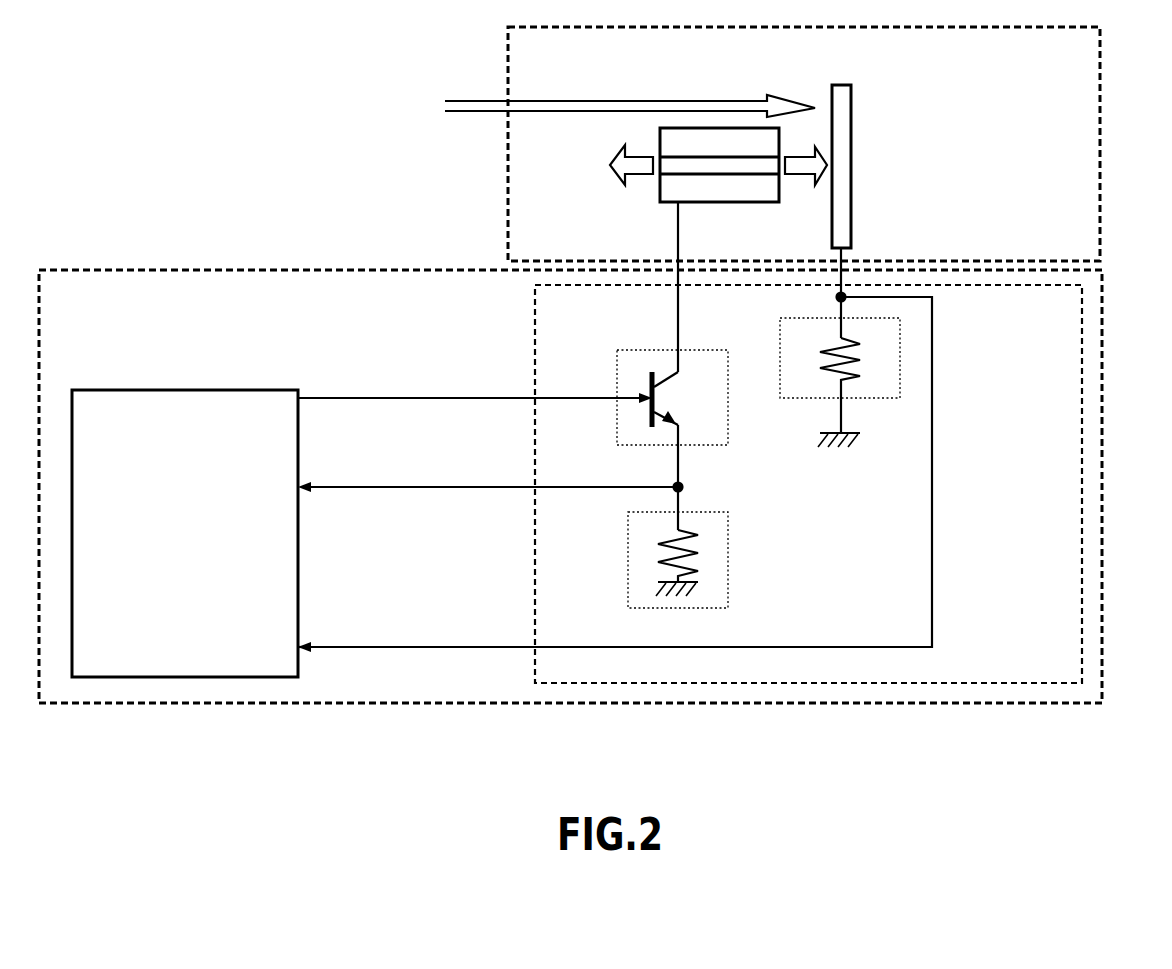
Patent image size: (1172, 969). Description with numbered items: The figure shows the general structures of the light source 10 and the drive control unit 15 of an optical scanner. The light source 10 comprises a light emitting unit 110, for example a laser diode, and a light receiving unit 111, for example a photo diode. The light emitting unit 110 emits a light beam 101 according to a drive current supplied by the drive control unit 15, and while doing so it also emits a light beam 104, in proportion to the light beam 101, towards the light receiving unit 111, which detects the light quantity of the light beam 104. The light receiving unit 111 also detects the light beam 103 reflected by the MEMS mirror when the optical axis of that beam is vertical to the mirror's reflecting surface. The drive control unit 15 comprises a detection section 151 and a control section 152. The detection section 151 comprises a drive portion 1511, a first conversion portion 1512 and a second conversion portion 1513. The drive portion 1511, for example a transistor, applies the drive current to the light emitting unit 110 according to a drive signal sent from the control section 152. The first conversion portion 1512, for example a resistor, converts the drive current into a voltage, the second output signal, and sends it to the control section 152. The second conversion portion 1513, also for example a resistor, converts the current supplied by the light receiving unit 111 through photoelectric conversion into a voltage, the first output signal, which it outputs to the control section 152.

The light source 10 is at (1130, 152).
The drive control unit 15 is at (1102, 422).
The light beam 101 is at (624, 153).
The light beam 103 is at (635, 100).
The light beam 104 is at (800, 183).
The light emitting unit 110 is at (661, 190).
The light receiving unit 111 is at (852, 162).
The detection section 151 is at (535, 337).
The control section 152 is at (183, 390).
The drive portion 1511 is at (640, 350).
The first conversion portion 1512 is at (728, 550).
The second conversion portion 1513 is at (872, 403).